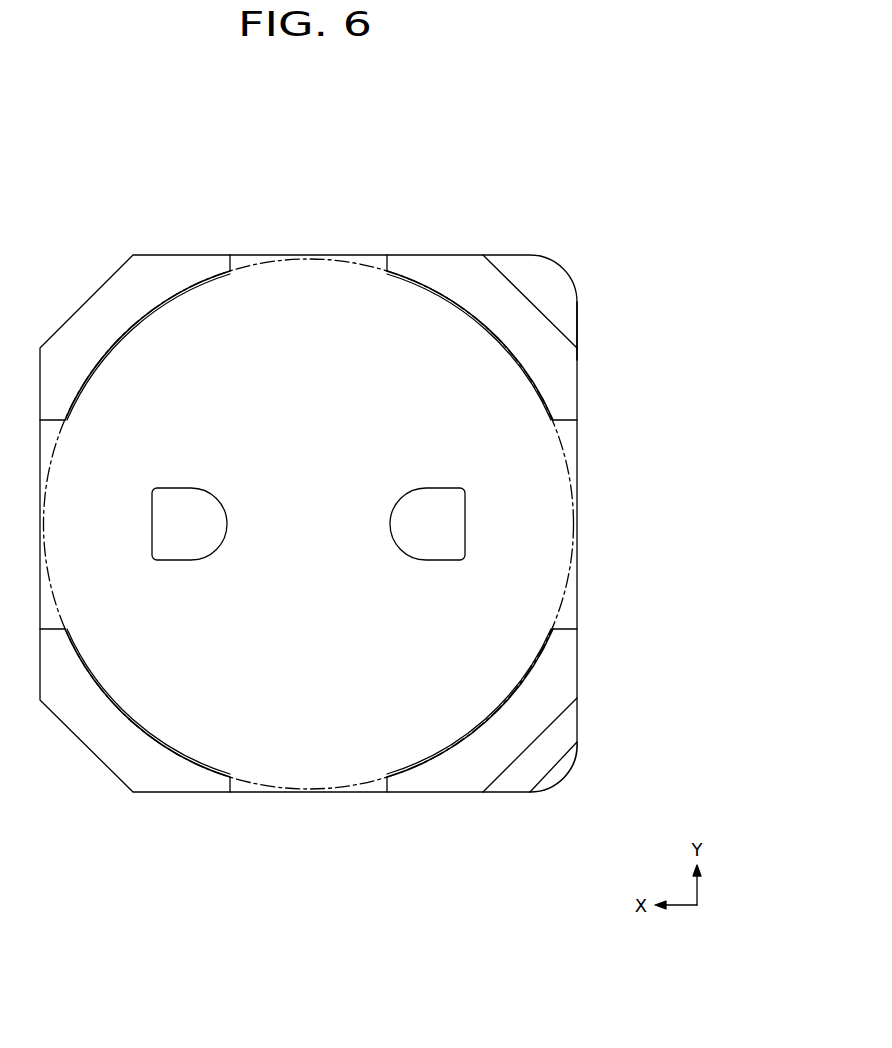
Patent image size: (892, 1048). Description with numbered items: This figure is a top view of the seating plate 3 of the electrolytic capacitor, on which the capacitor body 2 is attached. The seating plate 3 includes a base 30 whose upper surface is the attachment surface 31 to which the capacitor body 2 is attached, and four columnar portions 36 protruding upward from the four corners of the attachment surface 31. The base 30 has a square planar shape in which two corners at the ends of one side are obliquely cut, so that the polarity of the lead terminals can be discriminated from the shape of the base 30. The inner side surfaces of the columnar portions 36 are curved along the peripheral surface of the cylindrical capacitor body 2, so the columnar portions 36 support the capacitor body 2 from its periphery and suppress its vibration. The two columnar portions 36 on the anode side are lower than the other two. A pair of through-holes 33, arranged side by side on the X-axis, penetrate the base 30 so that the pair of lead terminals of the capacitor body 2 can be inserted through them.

The capacitor body 2 is at (577, 503).
The seating plate 3 is at (577, 307).
The base 30 is at (553, 778).
The attachment surface 31 is at (295, 757).
The through-hole 33 is at (180, 496).
The columnar portion 36 is at (173, 265).